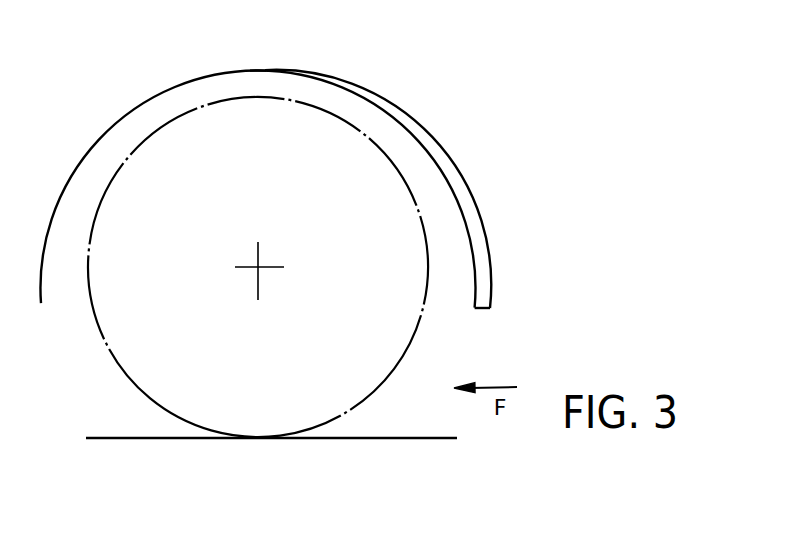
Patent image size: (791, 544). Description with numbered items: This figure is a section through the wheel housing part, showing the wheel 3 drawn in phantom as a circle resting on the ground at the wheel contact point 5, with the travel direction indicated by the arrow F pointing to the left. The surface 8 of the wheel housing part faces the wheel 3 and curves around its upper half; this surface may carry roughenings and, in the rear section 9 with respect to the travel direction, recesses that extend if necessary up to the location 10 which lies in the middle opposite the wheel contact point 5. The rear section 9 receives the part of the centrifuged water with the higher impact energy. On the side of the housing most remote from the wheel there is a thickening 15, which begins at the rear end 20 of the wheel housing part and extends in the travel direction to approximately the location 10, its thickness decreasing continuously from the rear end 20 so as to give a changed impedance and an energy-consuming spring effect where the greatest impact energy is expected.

The wheel 3 is at (103, 342).
The wheel contact point 5 is at (257, 440).
The surface of the wheel housing part 8 is at (140, 107).
The rear section 9 is at (492, 223).
The location opposite the wheel contact point 10 is at (258, 70).
The thickening 15 is at (458, 186).
The rear end of the wheel housing part 20 is at (480, 310).